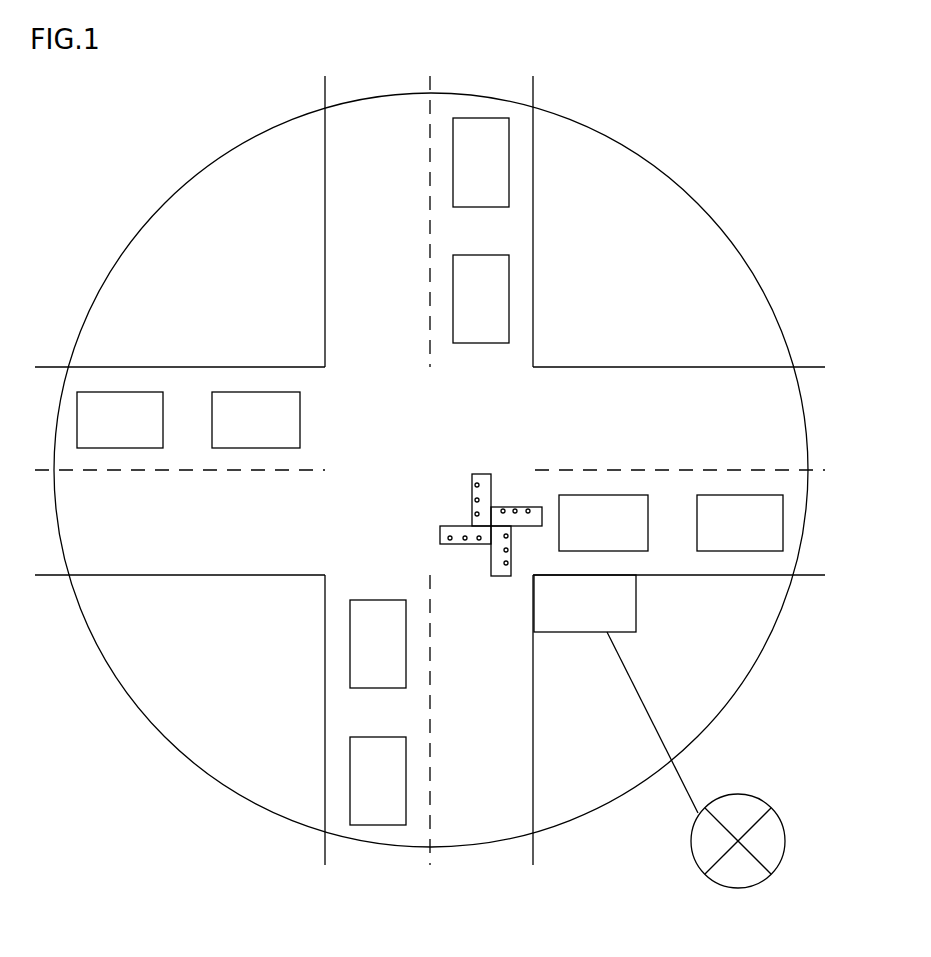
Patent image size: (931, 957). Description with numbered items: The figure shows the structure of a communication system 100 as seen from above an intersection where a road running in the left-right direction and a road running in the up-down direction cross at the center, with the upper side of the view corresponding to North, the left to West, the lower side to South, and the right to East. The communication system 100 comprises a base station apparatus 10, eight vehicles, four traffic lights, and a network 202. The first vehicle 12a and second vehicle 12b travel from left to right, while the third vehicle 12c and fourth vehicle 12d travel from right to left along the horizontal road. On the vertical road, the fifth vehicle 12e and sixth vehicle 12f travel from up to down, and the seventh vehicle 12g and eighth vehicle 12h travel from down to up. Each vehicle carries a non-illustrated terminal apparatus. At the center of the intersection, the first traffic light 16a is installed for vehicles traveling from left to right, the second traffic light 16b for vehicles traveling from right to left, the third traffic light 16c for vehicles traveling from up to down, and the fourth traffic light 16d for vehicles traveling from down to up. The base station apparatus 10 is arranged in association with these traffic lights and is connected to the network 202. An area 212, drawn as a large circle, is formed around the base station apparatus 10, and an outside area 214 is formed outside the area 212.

The communication system 100 is at (447, 921).
The base station apparatus 10 is at (572, 632).
The first vehicle 12a is at (257, 390).
The second vehicle 12b is at (118, 390).
The third vehicle 12c is at (603, 495).
The fourth vehicle 12d is at (740, 495).
The fifth vehicle 12e is at (509, 293).
The sixth vehicle 12f is at (509, 158).
The seventh vehicle 12g is at (350, 638).
The eighth vehicle 12h is at (350, 776).
The first traffic light 16a is at (473, 485).
The second traffic light 16b is at (491, 563).
The third traffic light 16c is at (512, 502).
The fourth traffic light 16d is at (452, 527).
The network 202 is at (762, 797).
The area 212 is at (750, 678).
The outside area 214 is at (578, 850).